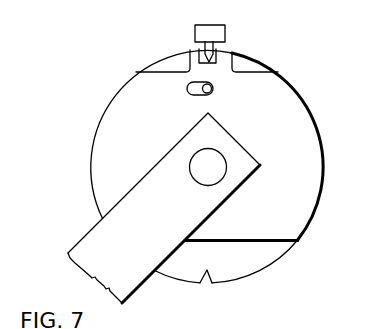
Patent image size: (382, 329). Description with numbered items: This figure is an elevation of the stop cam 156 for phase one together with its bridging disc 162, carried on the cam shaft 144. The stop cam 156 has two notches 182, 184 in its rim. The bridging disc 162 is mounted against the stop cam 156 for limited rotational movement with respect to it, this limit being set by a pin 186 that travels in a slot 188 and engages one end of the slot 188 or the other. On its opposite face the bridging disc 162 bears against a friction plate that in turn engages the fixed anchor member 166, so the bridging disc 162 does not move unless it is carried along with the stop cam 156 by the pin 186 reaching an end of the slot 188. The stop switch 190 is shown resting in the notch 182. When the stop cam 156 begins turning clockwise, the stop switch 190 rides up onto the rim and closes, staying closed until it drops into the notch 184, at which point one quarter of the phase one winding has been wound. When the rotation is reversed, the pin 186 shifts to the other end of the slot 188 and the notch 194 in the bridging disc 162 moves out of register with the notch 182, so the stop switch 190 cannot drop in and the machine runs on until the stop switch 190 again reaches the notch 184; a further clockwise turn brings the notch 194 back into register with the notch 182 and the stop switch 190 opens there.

The cam shaft 144 is at (210, 161).
The stop cam 156 is at (253, 258).
The bridging disc 162 is at (107, 149).
The anchor member 166 is at (122, 230).
The notch 182 is at (217, 48).
The notch 184 is at (204, 276).
The pin 186 is at (210, 93).
The slot 188 is at (196, 89).
The stop switch 190 is at (209, 35).
The notch 194 is at (192, 50).